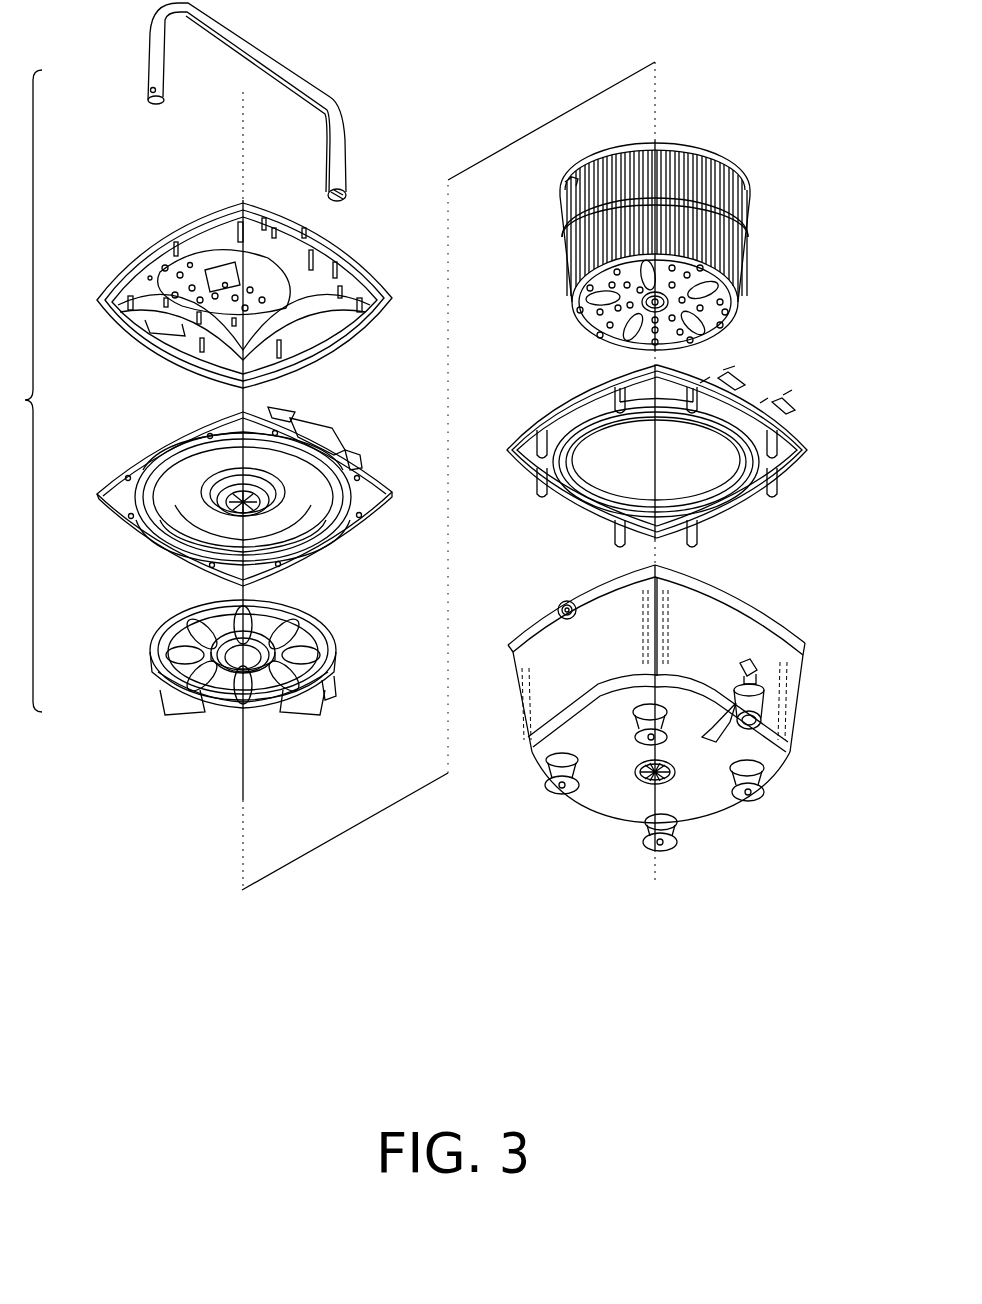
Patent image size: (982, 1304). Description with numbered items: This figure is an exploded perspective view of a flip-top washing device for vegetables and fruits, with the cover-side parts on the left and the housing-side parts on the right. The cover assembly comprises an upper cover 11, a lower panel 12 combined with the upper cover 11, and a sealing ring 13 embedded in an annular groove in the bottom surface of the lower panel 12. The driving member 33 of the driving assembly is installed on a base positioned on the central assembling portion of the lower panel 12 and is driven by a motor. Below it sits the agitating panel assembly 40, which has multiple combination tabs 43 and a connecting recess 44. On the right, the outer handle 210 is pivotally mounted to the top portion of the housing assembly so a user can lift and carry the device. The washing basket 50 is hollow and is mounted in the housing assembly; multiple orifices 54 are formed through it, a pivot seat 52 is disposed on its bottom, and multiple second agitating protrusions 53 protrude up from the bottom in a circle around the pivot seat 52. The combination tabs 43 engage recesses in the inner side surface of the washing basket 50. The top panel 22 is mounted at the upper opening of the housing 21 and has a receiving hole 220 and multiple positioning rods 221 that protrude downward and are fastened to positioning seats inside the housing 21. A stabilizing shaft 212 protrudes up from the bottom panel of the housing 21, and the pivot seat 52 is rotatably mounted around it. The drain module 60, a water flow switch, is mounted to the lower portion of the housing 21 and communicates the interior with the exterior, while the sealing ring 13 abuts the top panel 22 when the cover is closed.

The outer handle 210 is at (270, 42).
The upper cover 11 is at (143, 255).
The lower panel 12 is at (110, 498).
The sealing ring 13 is at (163, 545).
The driving member 33 is at (263, 507).
The agitating panel assembly 40 is at (234, 696).
The combination tabs 43 is at (175, 705).
The connecting recess 44 is at (263, 682).
The washing basket 50 is at (687, 206).
The orifices 54 is at (690, 175).
The second agitating protrusions 53 is at (697, 290).
The pivot seat 52 is at (722, 322).
The top panel 22 is at (687, 462).
The receiving hole 220 is at (595, 513).
The positioning rods 221 is at (778, 448).
The housing 21 is at (692, 708).
The stabilizing shaft 212 is at (667, 780).
The drain module 60 is at (757, 707).